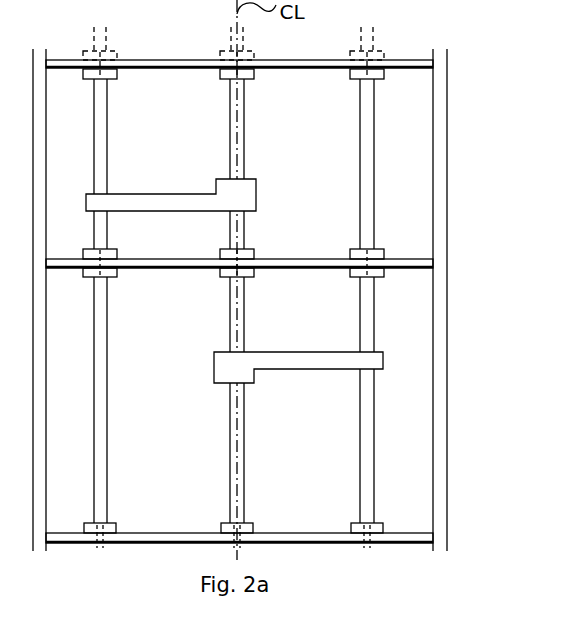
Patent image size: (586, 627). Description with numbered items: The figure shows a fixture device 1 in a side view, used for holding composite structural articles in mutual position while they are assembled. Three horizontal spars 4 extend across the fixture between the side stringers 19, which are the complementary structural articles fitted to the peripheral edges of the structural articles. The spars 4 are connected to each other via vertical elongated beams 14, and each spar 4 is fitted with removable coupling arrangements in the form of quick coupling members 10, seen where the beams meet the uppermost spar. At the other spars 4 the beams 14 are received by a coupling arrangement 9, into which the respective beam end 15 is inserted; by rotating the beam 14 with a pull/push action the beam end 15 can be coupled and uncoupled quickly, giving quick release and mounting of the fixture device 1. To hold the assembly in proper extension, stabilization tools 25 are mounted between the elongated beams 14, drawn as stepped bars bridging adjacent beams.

The fixture device 1 is at (472, 368).
The spar 4 is at (188, 60).
The coupling arrangement 9 is at (410, 278).
The quick coupling member 10 is at (383, 55).
The elongated beam 14 is at (103, 148).
The beam end 15 is at (259, 283).
The stringer 19 is at (440, 147).
The stabilization tool 25 is at (185, 197).